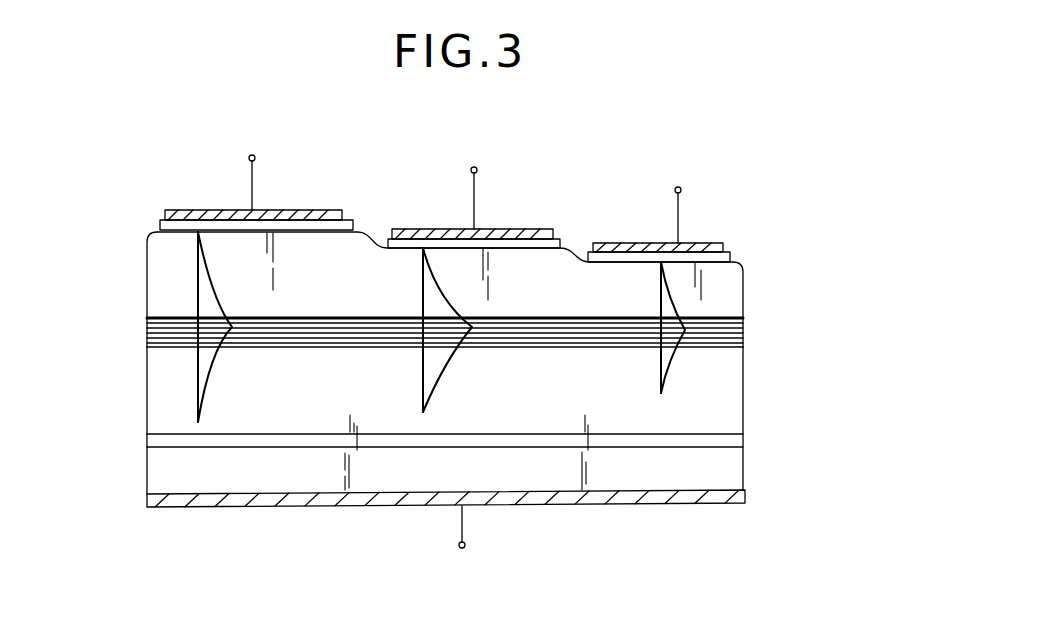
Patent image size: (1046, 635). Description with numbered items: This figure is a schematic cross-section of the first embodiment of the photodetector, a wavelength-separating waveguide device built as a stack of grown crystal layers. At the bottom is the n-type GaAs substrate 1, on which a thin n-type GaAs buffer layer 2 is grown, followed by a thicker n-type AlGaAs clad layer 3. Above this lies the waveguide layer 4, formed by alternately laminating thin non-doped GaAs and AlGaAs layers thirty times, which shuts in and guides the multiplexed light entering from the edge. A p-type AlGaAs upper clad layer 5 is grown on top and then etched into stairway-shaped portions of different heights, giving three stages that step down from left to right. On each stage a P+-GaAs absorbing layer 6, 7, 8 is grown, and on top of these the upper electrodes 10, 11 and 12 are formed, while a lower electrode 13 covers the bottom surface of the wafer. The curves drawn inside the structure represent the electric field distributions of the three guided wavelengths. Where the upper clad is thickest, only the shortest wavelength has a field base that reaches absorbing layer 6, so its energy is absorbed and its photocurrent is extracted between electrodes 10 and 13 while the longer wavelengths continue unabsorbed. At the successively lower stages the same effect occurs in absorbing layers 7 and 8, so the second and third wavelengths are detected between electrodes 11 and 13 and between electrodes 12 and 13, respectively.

The substrate 1 is at (733, 475).
The buffer layer 2 is at (738, 437).
The clad layer 3 is at (732, 380).
The waveguide layer 4 is at (743, 320).
The upper clad layer 5 is at (732, 280).
The absorbing layer 6 is at (350, 220).
The absorbing layer 7 is at (552, 239).
The absorbing layer 8 is at (728, 252).
The upper electrode 10 is at (295, 210).
The upper electrode 11 is at (510, 229).
The upper electrode 12 is at (697, 243).
The lower electrode 13 is at (745, 492).